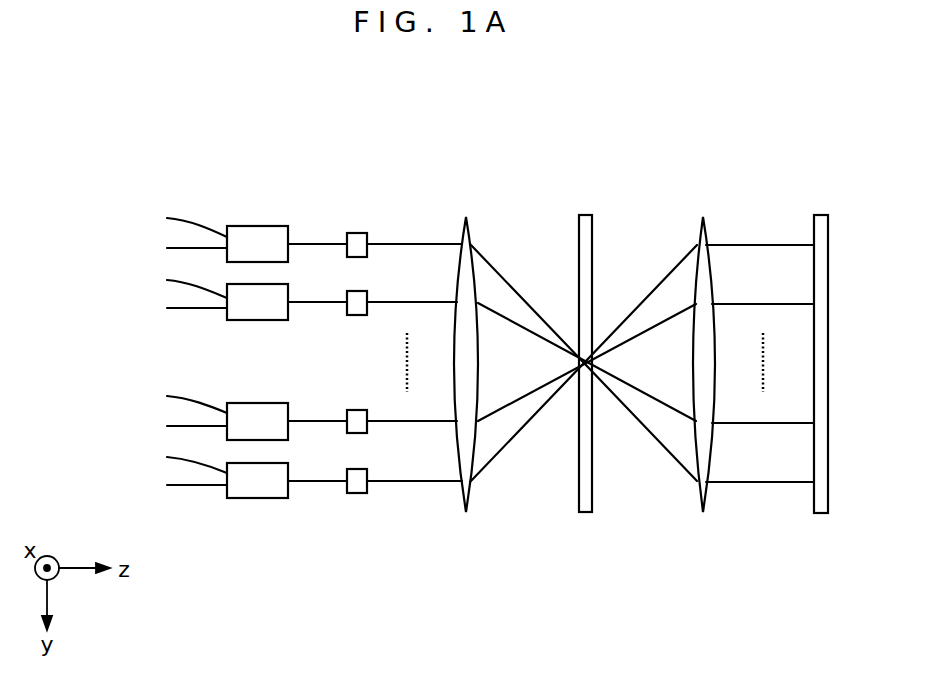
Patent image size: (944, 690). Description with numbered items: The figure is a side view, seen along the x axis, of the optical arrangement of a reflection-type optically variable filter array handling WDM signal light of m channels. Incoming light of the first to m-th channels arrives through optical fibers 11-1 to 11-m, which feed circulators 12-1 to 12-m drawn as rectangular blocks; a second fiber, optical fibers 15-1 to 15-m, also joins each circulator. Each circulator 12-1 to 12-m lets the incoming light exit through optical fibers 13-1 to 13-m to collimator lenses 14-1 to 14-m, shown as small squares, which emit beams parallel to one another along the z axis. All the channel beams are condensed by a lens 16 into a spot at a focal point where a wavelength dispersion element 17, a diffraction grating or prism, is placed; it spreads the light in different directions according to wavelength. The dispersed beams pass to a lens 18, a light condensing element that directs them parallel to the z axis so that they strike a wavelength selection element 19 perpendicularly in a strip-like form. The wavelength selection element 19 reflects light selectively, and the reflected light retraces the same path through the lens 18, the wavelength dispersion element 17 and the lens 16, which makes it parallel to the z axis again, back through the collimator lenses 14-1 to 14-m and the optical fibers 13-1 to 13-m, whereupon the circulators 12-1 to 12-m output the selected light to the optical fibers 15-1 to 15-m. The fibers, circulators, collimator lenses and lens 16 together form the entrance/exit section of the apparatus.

The optical fiber 11-1 is at (200, 229).
The optical fiber 15-1 is at (197, 250).
The circulator 12-1 is at (253, 226).
The optical fiber 13-1 is at (313, 244).
The collimator lens 14-1 is at (372, 233).
The optical fiber 11-m is at (200, 465).
The optical fiber 15-m is at (197, 488).
The circulator 12-m is at (253, 498).
The optical fiber 13-m is at (315, 482).
The collimator lens 14-m is at (365, 493).
The lens 16 is at (470, 228).
The wavelength dispersion element 17 is at (593, 227).
The lens 18 is at (706, 228).
The wavelength selection element 19 is at (828, 228).